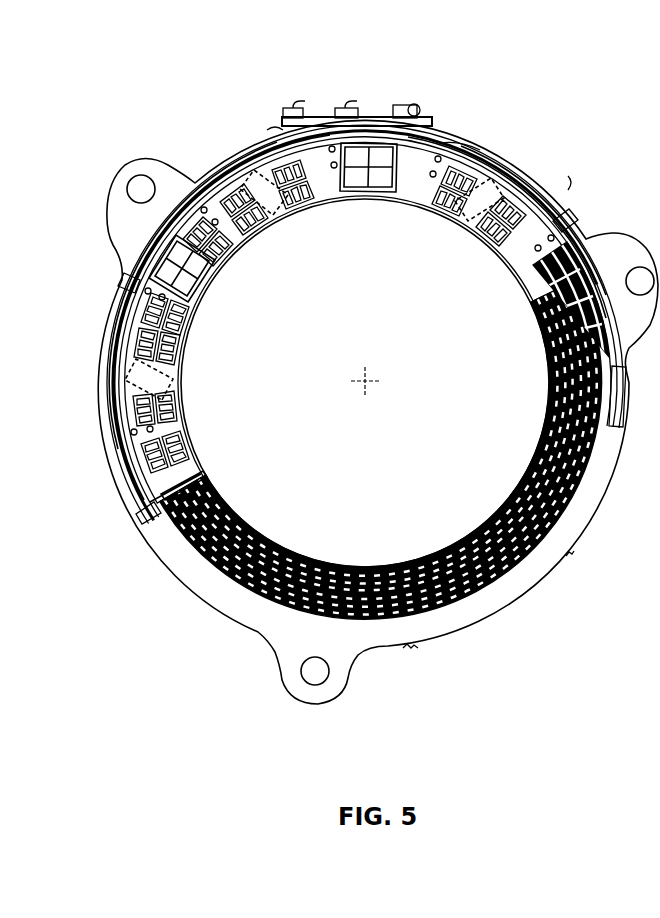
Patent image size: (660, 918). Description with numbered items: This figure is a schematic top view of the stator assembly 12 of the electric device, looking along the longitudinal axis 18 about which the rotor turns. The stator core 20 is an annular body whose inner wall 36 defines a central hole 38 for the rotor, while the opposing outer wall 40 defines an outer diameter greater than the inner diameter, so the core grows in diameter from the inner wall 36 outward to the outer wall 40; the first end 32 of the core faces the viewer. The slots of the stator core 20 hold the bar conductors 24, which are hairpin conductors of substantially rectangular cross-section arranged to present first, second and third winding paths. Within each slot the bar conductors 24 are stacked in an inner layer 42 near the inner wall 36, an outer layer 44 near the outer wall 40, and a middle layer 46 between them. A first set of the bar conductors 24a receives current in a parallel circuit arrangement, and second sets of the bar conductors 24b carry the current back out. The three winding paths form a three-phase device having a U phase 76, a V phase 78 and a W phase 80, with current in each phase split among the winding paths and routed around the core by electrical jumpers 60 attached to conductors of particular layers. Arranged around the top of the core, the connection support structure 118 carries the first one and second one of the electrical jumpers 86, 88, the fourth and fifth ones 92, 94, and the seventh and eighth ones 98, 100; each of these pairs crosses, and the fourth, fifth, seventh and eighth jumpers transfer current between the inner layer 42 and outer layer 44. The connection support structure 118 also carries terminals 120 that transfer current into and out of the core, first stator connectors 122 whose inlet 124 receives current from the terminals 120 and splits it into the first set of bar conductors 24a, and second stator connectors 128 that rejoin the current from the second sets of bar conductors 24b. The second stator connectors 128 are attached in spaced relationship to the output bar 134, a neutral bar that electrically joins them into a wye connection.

The stator assembly 12 is at (90, 71).
The longitudinal axis 18 is at (370, 386).
The stator core 20 is at (513, 593).
The bar conductors 24 is at (205, 190).
The first set of the bar conductors 24a is at (287, 128).
The second sets of the bar conductors 24b is at (386, 110).
The first end 32 is at (430, 630).
The inner wall 36 is at (396, 449).
The hole 38 is at (290, 547).
The outer wall 40 is at (212, 603).
The inner layer 42 is at (497, 512).
The outer layer 44 is at (567, 508).
The middle layer 46 is at (205, 475).
The electrical jumpers 60 is at (316, 248).
The U phase 76 is at (513, 267).
The V phase 78 is at (342, 196).
The W phase 80 is at (191, 313).
The first one of the electrical jumpers 86 is at (500, 192).
The second one of the electrical jumpers 88 is at (485, 178).
The fourth one of the electrical jumpers 92 is at (252, 168).
The fifth one of the electrical jumpers 94 is at (222, 190).
The seventh one of the electrical jumpers 98 is at (140, 348).
The eighth one of the electrical jumpers 100 is at (130, 388).
The connection support structure 118 is at (527, 268).
The terminals 120 is at (300, 110).
The first stator connectors 122 is at (152, 282).
The inlet 124 is at (188, 309).
The second stator connectors 128 is at (173, 222).
The output bar 134 is at (442, 143).